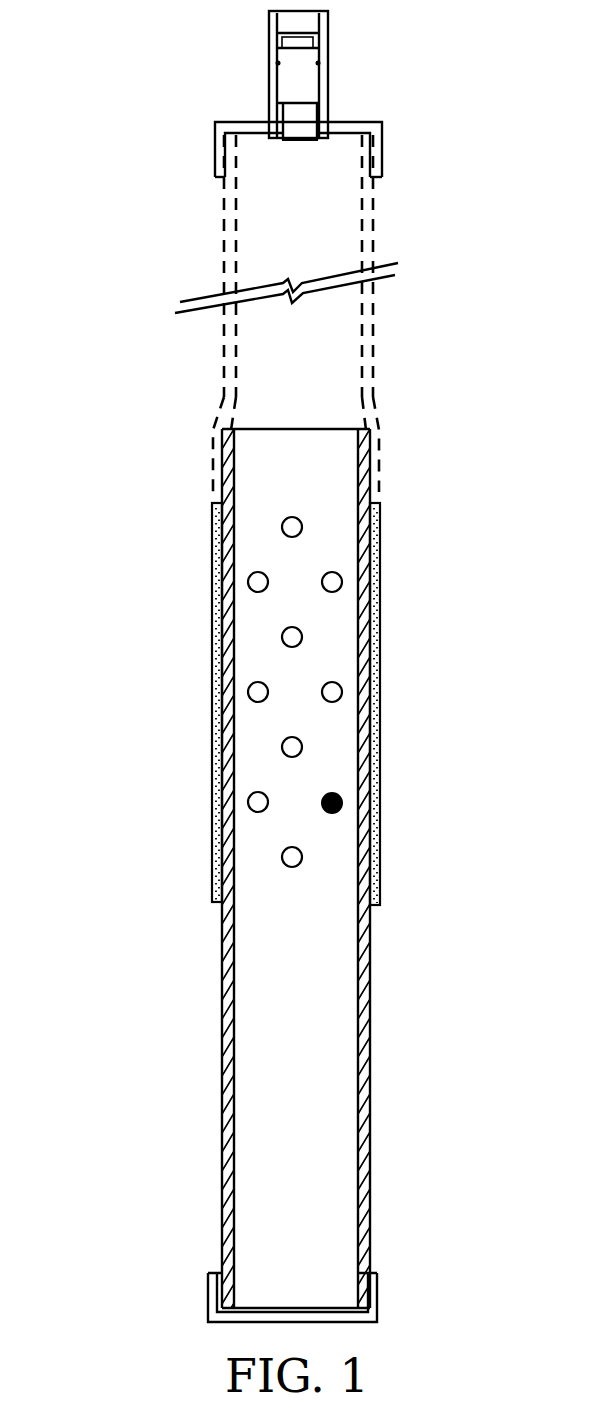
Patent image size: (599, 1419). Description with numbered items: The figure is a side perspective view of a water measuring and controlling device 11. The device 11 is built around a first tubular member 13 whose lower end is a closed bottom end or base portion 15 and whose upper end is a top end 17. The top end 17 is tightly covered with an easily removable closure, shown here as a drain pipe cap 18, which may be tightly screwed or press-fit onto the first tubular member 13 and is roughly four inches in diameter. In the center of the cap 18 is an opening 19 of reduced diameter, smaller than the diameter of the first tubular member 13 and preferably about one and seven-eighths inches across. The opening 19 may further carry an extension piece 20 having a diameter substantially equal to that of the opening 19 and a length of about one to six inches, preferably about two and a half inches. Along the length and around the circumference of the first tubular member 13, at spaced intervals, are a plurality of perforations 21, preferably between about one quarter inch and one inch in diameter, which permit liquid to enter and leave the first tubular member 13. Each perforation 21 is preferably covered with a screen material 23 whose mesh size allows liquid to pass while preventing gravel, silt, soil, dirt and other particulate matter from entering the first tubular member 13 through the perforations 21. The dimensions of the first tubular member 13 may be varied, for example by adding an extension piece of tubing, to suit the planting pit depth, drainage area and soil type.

The water measuring and controlling device 11 is at (194, 347).
The first tubular member 13 is at (228, 1007).
The bottom end or base portion 15 is at (217, 1293).
The top end 17 is at (228, 148).
The drain pipe cap 18 is at (377, 157).
The opening 19 is at (300, 127).
The extension piece 20 is at (273, 80).
The perforations 21 is at (334, 583).
The screen material 23 is at (343, 803).